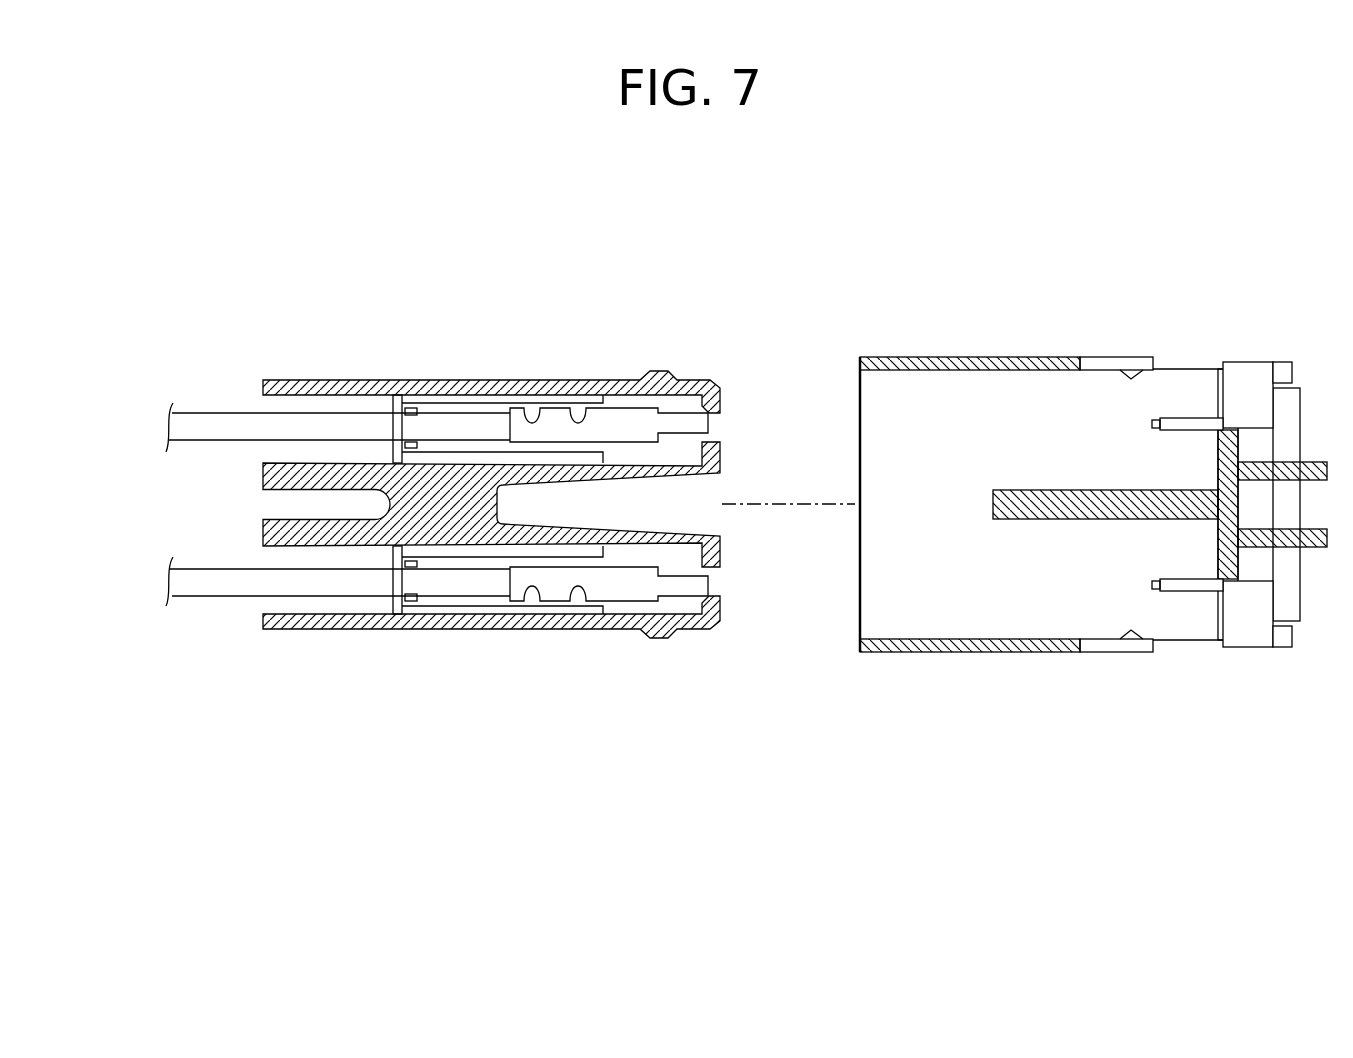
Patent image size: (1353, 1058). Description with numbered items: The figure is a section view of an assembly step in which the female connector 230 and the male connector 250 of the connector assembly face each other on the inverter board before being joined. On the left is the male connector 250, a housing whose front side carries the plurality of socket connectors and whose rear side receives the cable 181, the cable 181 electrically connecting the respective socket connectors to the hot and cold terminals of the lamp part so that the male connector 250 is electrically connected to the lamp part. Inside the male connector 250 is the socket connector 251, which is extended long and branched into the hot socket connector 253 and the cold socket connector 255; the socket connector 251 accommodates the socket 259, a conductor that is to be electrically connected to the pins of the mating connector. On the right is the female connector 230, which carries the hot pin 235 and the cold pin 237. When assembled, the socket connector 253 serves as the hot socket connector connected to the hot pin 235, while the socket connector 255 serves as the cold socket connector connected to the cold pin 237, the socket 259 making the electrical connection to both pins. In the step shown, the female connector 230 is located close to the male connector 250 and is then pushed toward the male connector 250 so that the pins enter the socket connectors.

The cable 181 is at (195, 433).
The female connector 230 is at (1053, 357).
The hot pin 235 is at (1190, 420).
The cold pin 237 is at (1190, 592).
The male connector 250 is at (294, 630).
The socket connector 251 is at (491, 578).
The hot socket connector 253 is at (537, 484).
The cold socket connector 255 is at (448, 630).
The socket 259 is at (623, 408).